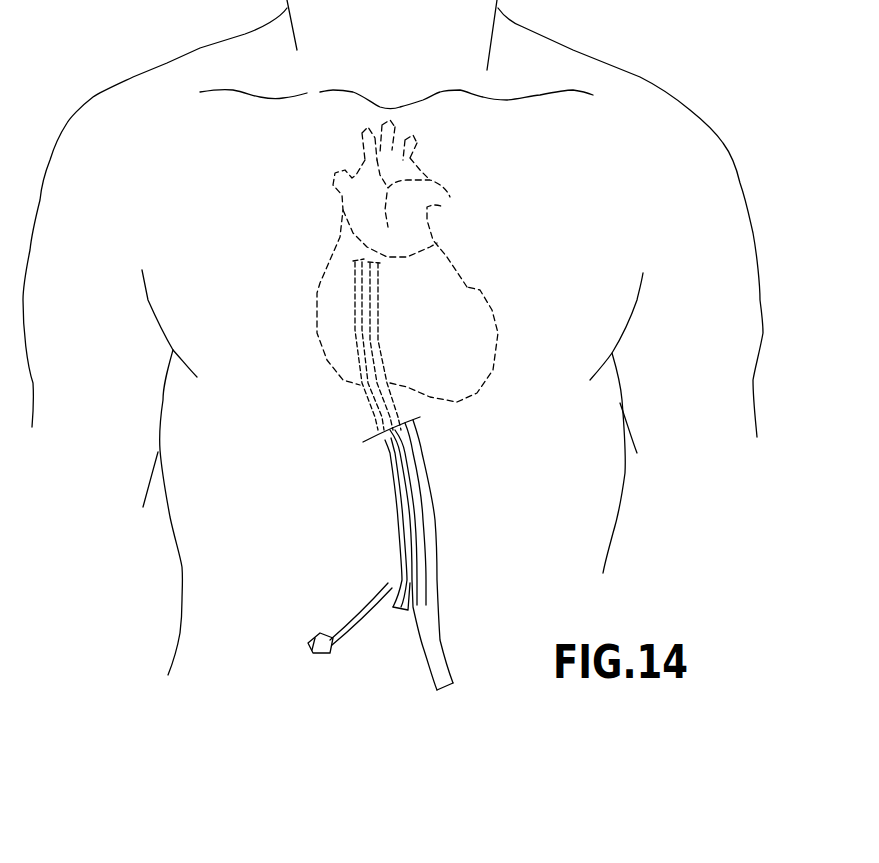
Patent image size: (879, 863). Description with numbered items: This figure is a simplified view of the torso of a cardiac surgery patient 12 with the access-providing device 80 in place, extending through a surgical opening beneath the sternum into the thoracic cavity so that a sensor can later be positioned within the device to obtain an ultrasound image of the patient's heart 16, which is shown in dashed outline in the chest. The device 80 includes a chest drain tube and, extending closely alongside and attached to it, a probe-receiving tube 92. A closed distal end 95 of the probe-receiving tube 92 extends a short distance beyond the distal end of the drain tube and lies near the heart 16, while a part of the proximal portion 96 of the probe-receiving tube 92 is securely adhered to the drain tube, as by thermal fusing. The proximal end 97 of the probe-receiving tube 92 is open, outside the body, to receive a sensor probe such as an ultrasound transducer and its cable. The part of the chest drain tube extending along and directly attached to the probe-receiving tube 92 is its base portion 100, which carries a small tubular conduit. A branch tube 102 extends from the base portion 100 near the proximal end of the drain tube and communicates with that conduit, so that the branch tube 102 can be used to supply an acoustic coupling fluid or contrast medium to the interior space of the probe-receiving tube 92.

The patient 12 is at (720, 140).
The heart 16 is at (513, 283).
The closed distal end 95 is at (437, 243).
The access-providing device 80 is at (447, 557).
The probe-receiving tube 92 is at (417, 453).
The proximal portion 96 is at (440, 645).
The proximal end 97 is at (443, 693).
The base portion 100 is at (398, 500).
The branch tube 102 is at (353, 623).